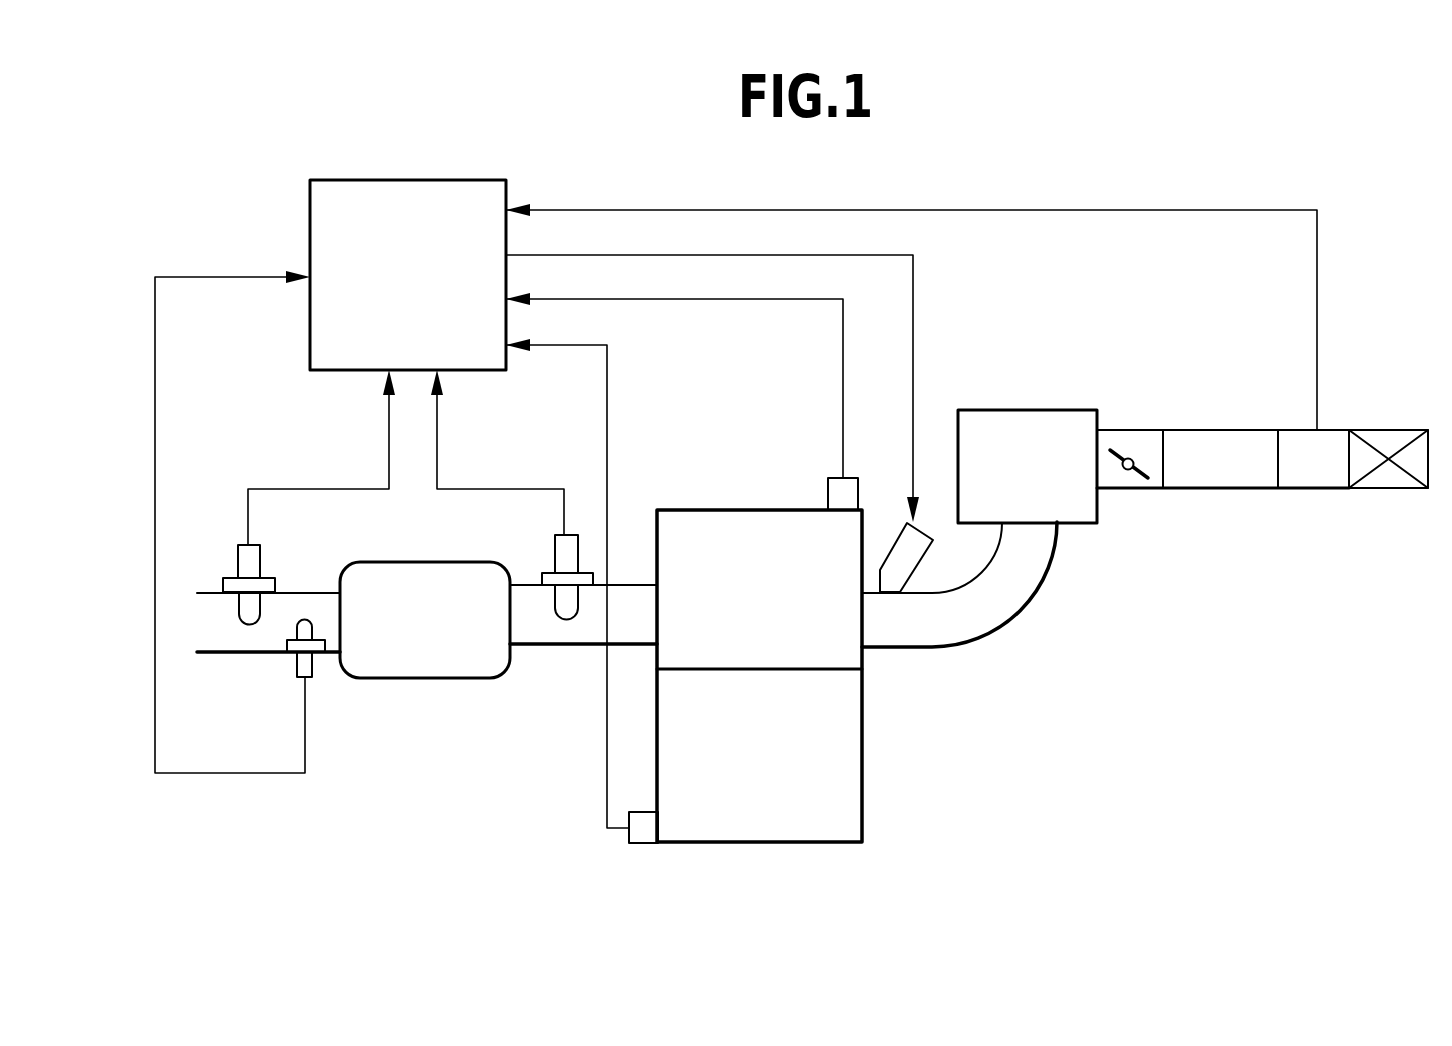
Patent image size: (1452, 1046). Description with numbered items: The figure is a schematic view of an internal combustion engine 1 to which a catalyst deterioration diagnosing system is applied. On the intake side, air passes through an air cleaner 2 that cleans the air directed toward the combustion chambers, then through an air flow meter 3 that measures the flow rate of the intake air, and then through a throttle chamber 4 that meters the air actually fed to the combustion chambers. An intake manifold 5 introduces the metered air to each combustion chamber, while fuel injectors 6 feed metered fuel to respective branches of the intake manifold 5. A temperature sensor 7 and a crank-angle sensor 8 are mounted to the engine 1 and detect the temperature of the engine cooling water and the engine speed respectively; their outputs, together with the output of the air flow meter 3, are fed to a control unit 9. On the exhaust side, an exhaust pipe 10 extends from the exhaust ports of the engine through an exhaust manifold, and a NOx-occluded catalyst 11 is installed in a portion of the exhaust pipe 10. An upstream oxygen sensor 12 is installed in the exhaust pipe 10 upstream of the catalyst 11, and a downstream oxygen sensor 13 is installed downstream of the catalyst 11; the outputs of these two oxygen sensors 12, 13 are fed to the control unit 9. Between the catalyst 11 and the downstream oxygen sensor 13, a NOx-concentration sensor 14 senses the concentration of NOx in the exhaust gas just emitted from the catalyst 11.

The internal combustion engine 1 is at (998, 342).
The air cleaner 2 is at (1383, 427).
The air flow meter 3 is at (1308, 490).
The throttle chamber 4 is at (1133, 433).
The intake manifold 5 is at (1032, 607).
The fuel injectors 6 is at (893, 548).
The temperature sensor 7 is at (828, 490).
The crank-angle sensor 8 is at (627, 830).
The control unit 9 is at (310, 235).
The exhaust pipe 10 is at (560, 648).
The NOx-occluded catalyst 11 is at (422, 682).
The upstream oxygen sensor 12 is at (558, 553).
The downstream oxygen sensor 13 is at (243, 562).
The NOx-concentration sensor 14 is at (295, 665).